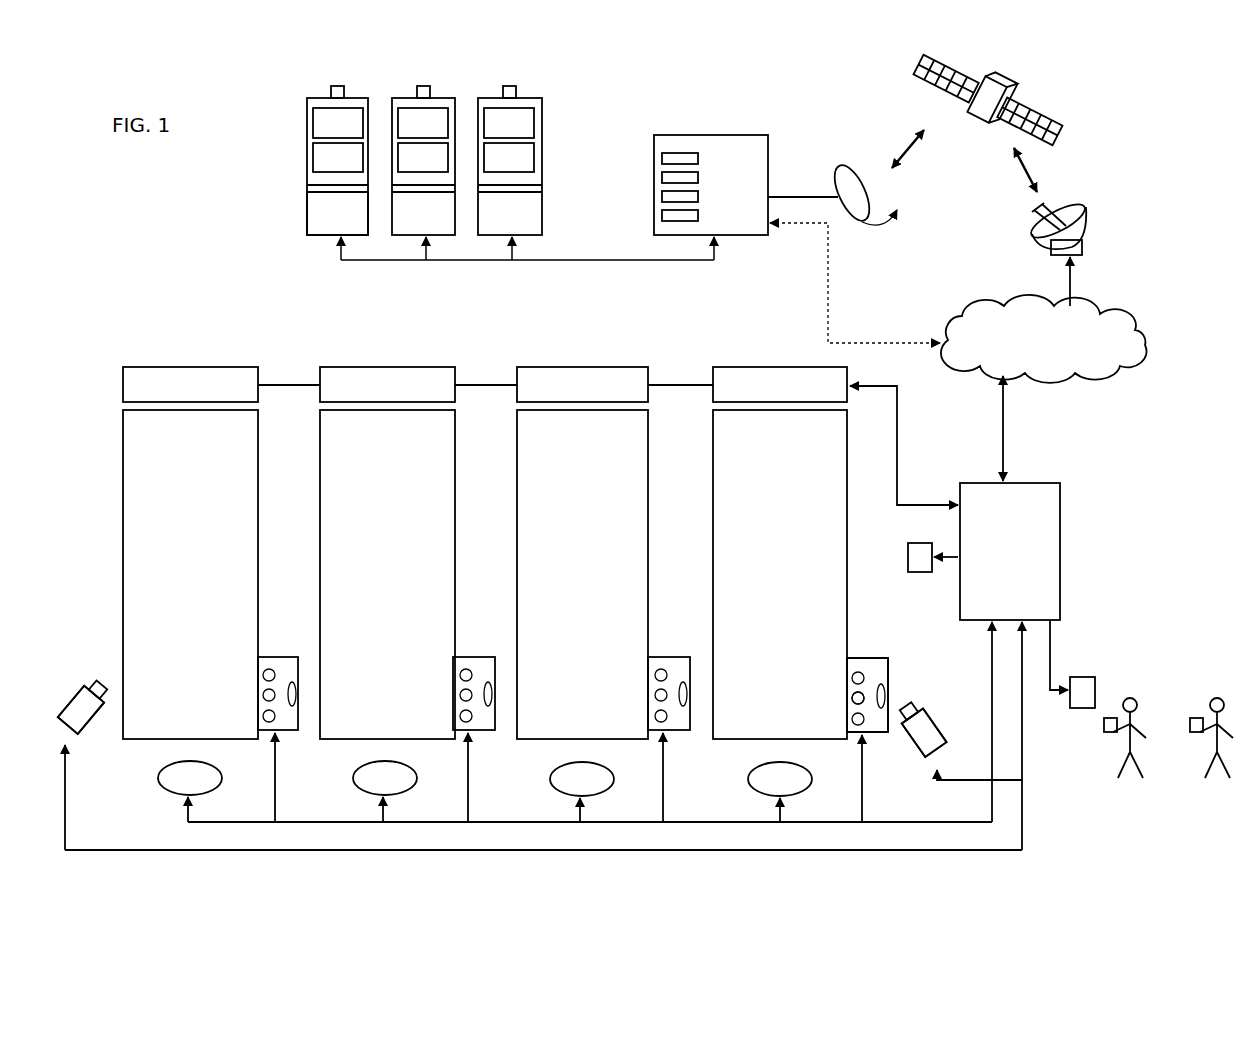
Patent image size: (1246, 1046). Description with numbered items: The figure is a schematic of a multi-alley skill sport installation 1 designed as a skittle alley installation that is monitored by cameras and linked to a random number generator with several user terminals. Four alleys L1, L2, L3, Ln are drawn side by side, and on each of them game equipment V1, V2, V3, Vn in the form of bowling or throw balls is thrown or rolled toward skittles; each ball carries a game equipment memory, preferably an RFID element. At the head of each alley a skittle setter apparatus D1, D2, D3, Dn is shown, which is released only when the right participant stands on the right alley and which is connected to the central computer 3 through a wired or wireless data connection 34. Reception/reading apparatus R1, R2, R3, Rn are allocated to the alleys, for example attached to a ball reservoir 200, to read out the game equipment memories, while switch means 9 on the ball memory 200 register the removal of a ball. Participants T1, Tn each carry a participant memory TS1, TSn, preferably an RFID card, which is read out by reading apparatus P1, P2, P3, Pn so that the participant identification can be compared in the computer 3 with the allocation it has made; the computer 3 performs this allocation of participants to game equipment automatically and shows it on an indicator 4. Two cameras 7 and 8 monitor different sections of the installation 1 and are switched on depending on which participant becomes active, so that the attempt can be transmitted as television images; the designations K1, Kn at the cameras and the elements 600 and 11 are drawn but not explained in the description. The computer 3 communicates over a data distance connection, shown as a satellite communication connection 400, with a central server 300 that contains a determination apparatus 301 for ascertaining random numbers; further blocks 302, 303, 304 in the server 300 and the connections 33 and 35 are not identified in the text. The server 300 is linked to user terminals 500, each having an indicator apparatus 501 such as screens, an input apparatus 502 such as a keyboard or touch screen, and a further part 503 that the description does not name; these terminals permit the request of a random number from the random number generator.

The skill/skilled sport installation 1 is at (155, 296).
The user terminal 500 is at (287, 110).
The indicator apparatus 501 is at (309, 128).
The input apparatus 502 is at (312, 185).
The partition band 503 is at (312, 158).
The server 300 is at (714, 130).
The determination apparatus 301 is at (660, 158).
The server module 302 is at (660, 177).
The server module 303 is at (660, 196).
The server module 304 is at (660, 215).
The communication link 35 is at (830, 334).
The satellite communication connection 400 is at (1082, 165).
The bidirectional link to WAN 33 is at (1006, 455).
The central computer 3 is at (1050, 568).
The data connection 34 is at (900, 448).
The indicator 4 is at (905, 554).
The payment terminal 11 is at (1088, 675).
The ball reservoir 200 is at (890, 669).
The switch means 9 is at (845, 699).
The camera 8 is at (930, 733).
The camera 7 is at (76, 702).
The bus lines 600 is at (1049, 821).
The skittle setter apparatus Dn is at (142, 374).
The skittle setter apparatus D3 is at (340, 374).
The skittle setter apparatus D2 is at (537, 374).
The skittle setter apparatus D1 is at (734, 374).
The alley Ln is at (203, 473).
The alley L3 is at (400, 473).
The alley L2 is at (596, 473).
The alley L1 is at (794, 473).
The game equipment Vn is at (272, 655).
The game equipment V3 is at (468, 655).
The game equipment V2 is at (663, 655).
The game equipment V1 is at (860, 656).
The reception/reading apparatus Rn is at (289, 733).
The reception/reading apparatus R3 is at (486, 733).
The reception/reading apparatus R2 is at (681, 733).
The reception/reading apparatus R1 is at (878, 735).
The reception/reading apparatus Pn is at (160, 782).
The reception/reading apparatus P3 is at (357, 783).
The reception/reading apparatus P2 is at (553, 784).
The reception/reading apparatus P1 is at (751, 784).
The camera n Kn is at (94, 740).
The camera 1 K1 is at (921, 768).
The participant Tn is at (1127, 783).
The participant T1 is at (1213, 783).
The participant memory TSn is at (1109, 735).
The participant memory TS1 is at (1195, 735).